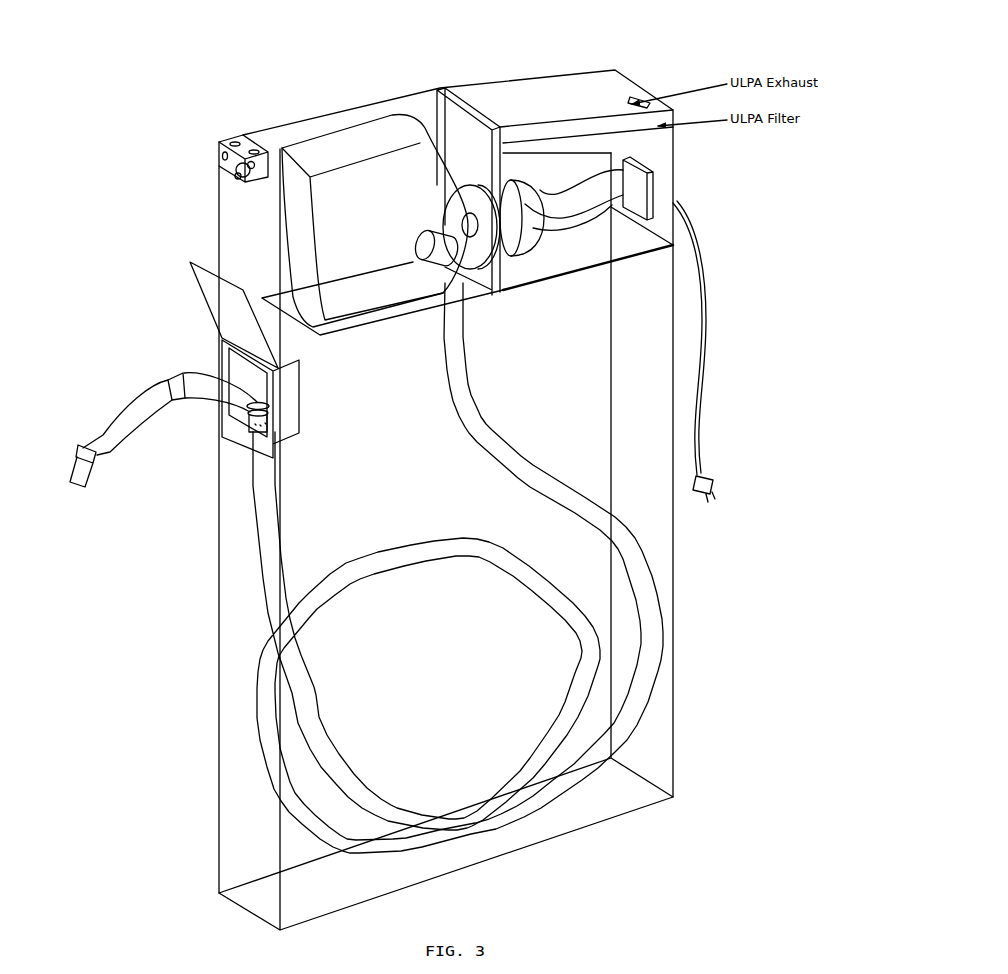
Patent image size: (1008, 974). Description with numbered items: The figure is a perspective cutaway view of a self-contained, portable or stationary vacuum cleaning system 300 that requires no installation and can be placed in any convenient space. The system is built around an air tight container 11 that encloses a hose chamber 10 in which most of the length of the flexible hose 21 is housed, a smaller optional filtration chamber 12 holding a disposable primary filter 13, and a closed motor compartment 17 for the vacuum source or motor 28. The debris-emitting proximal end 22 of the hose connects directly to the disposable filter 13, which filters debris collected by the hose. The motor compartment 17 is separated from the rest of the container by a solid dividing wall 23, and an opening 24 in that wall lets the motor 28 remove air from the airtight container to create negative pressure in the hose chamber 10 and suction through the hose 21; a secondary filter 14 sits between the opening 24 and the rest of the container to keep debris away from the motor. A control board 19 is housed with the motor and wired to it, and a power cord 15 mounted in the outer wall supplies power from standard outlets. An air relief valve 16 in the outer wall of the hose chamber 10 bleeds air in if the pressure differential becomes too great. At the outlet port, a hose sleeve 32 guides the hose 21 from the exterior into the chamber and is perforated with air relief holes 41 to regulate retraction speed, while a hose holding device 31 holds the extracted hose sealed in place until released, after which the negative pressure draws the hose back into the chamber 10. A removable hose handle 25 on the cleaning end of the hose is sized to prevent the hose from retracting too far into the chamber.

The hose chamber 10 is at (587, 355).
The air tight container 11 is at (679, 313).
The filtration chamber 12 is at (418, 105).
The disposable primary filter 13 is at (337, 211).
The secondary filter 14 is at (461, 100).
The power cord 15 is at (710, 481).
The air relief valve 16 is at (214, 155).
The motor compartment 17 is at (664, 152).
The control board 19 is at (642, 190).
The flexible hose 21 is at (491, 450).
The proximal end of the flexible hose 22 is at (417, 248).
The solid dividing wall 23 is at (634, 253).
The opening in the solid dividing wall 24 is at (468, 220).
The hose handle 25 is at (105, 423).
The vacuum source (motor) 28 is at (513, 207).
The hose holding device 31 is at (250, 424).
The hose sleeve 32 is at (252, 404).
The air relief holes 41 is at (262, 425).
The vacuum cleaning system 300 is at (205, 616).